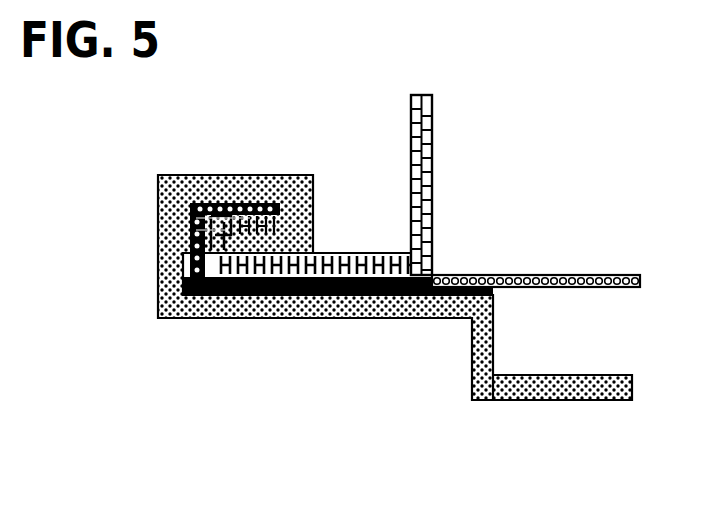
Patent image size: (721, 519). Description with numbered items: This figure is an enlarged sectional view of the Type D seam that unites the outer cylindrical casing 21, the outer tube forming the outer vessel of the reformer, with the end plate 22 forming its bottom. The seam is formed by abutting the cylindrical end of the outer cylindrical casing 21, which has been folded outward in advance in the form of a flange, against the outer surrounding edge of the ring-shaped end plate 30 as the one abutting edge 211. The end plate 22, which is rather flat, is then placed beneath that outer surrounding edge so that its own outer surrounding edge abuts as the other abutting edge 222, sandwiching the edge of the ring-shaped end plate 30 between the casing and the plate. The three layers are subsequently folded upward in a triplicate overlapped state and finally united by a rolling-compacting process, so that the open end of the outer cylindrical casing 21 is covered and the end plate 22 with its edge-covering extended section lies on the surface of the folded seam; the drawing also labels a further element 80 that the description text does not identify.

The outer cylindrical casing 21 is at (423, 193).
The one abutting edge 211 is at (352, 250).
The end plate 22 is at (558, 398).
The other abutting edge 222 is at (310, 310).
The ring-shaped end plate 30 is at (585, 277).
The electronic component 80 is at (233, 290).